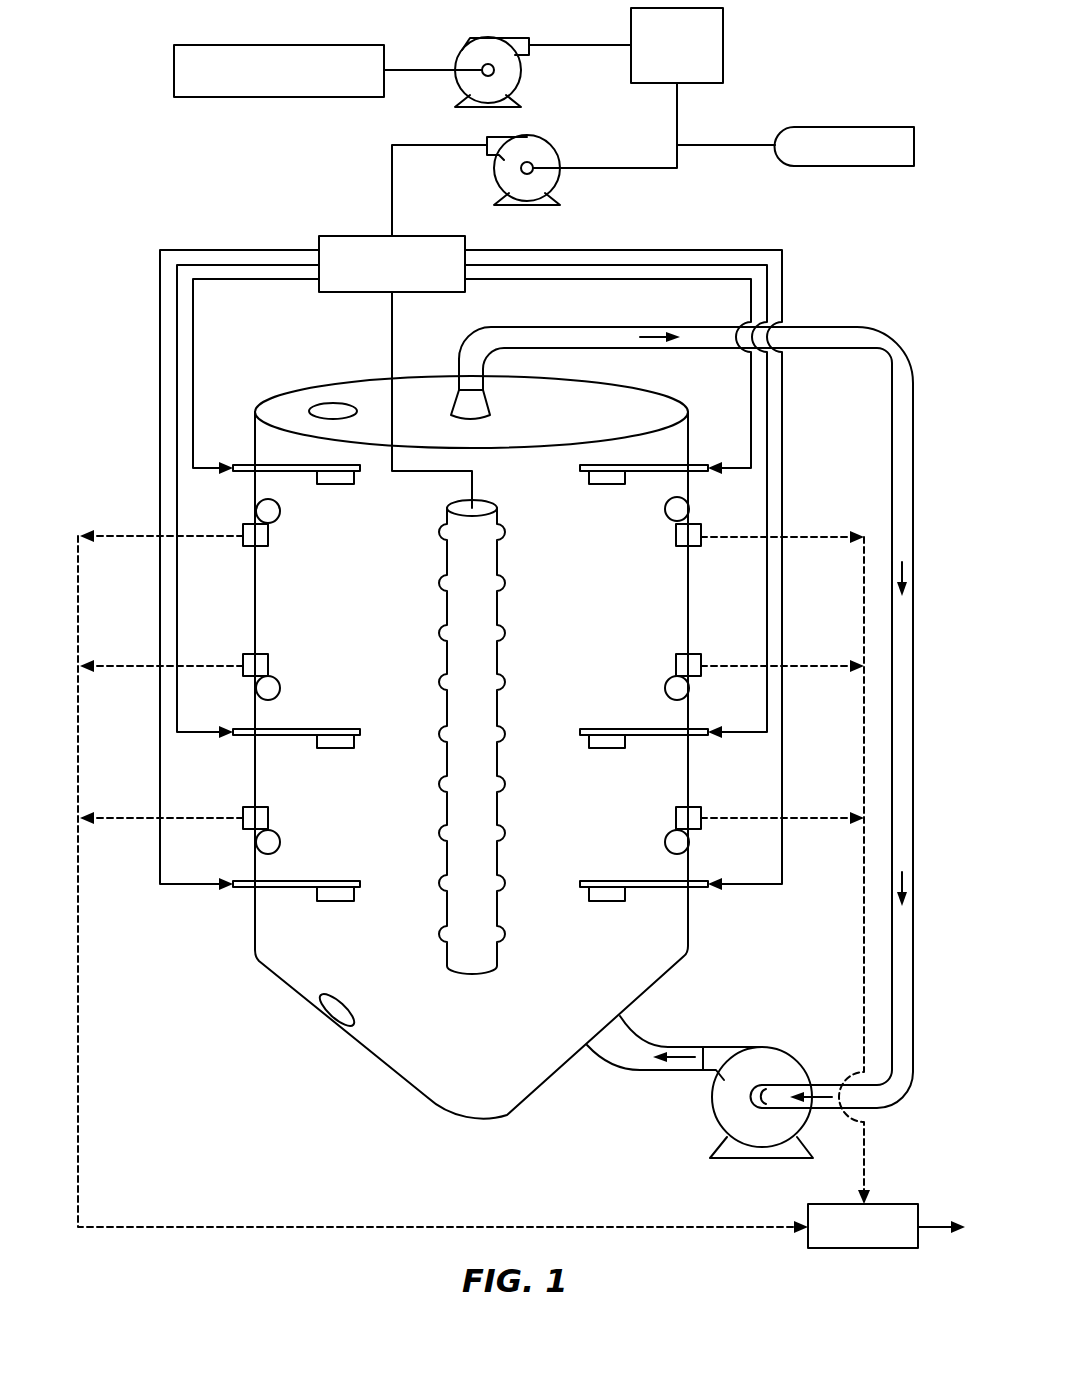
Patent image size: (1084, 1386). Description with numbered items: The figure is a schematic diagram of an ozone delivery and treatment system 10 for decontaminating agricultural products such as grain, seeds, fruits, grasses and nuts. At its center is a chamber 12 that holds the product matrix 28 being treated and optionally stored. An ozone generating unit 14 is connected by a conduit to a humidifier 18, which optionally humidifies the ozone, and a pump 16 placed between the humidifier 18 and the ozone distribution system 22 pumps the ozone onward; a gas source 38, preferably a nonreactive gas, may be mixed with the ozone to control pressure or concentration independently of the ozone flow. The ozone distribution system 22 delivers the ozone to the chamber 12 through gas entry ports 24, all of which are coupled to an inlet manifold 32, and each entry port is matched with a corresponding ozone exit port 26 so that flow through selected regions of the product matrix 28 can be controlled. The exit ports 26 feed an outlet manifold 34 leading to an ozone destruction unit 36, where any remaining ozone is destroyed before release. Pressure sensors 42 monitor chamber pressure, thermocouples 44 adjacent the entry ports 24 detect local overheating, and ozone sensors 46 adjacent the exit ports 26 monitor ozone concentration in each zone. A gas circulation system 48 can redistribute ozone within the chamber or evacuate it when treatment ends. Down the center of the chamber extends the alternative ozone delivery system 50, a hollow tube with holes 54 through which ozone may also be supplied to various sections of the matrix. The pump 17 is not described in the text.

The ozone delivery and treatment system 10 is at (932, 56).
The chamber 12 is at (378, 1062).
The ozone generating unit 14 is at (174, 72).
The pump 16 is at (488, 37).
The pump 17 is at (545, 140).
The humidifier 18 is at (724, 26).
The ozone distribution system 22 is at (345, 236).
The gas entry ports 24 is at (242, 472).
The ozone exit ports 26 is at (248, 548).
The product matrix 28 is at (384, 676).
The inlet manifold 32 is at (177, 372).
The outlet manifold 34 is at (80, 925).
The ozone destruction unit 36 is at (890, 1204).
The gas source 38 is at (830, 127).
The pressure sensors 42 is at (325, 405).
The thermocouples 44 is at (330, 903).
The ozone sensors 46 is at (280, 842).
The gas circulation system 48 is at (762, 1047).
The ozone delivery system 50 is at (499, 565).
The holes 54 is at (447, 583).